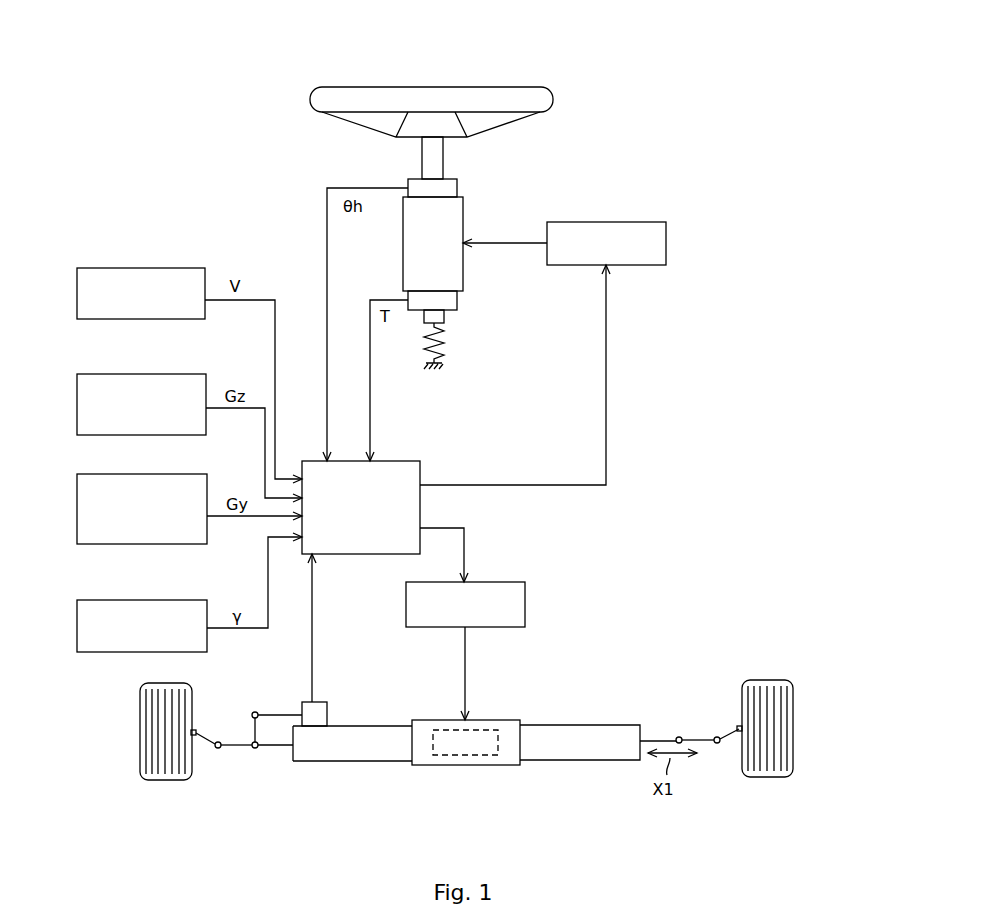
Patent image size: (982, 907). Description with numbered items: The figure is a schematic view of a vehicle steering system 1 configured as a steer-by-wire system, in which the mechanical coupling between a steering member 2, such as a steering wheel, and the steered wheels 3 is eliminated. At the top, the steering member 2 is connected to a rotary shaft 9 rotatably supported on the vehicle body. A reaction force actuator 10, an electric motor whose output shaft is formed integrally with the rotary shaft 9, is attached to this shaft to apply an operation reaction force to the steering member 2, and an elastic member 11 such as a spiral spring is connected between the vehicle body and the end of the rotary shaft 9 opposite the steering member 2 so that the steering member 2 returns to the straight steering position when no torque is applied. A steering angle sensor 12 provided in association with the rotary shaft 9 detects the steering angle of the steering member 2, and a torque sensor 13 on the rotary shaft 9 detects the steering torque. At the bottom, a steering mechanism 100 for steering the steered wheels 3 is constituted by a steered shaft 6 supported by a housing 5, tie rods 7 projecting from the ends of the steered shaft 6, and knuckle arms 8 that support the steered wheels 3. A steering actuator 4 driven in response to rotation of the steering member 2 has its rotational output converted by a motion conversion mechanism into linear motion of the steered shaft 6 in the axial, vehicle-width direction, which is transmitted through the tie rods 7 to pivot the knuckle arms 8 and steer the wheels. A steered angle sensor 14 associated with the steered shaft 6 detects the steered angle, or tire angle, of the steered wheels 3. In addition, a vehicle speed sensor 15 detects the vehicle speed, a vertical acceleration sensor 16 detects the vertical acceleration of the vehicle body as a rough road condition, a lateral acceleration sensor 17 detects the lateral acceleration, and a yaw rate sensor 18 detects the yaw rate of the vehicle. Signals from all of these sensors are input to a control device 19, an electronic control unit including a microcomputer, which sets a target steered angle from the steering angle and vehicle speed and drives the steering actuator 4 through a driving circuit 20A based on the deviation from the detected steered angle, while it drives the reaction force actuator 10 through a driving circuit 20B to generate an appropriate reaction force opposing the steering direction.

The vehicle steering system 1 is at (600, 170).
The steering member 2 is at (508, 87).
The steered wheels 3 is at (168, 780).
The steering actuator 4 is at (466, 756).
The housing 5 is at (383, 763).
The steered shaft 6 is at (277, 750).
The tie rods 7 is at (237, 750).
The knuckle arms 8 is at (210, 735).
The rotary shaft 9 is at (443, 157).
The reaction force actuator 10 is at (463, 213).
The elastic member 11 is at (444, 345).
The steering angle sensor 12 is at (457, 188).
The torque sensor 13 is at (457, 300).
The steered angle sensor 14 is at (310, 702).
The vehicle speed sensor 15 is at (148, 268).
The vertical acceleration sensor 16 is at (150, 374).
The lateral acceleration sensor 17 is at (150, 474).
The yaw rate sensor 18 is at (150, 600).
The control device 19 is at (403, 461).
The driving circuit 20A is at (525, 604).
The driving circuit 20B is at (666, 243).
The steering mechanism 100 is at (692, 695).